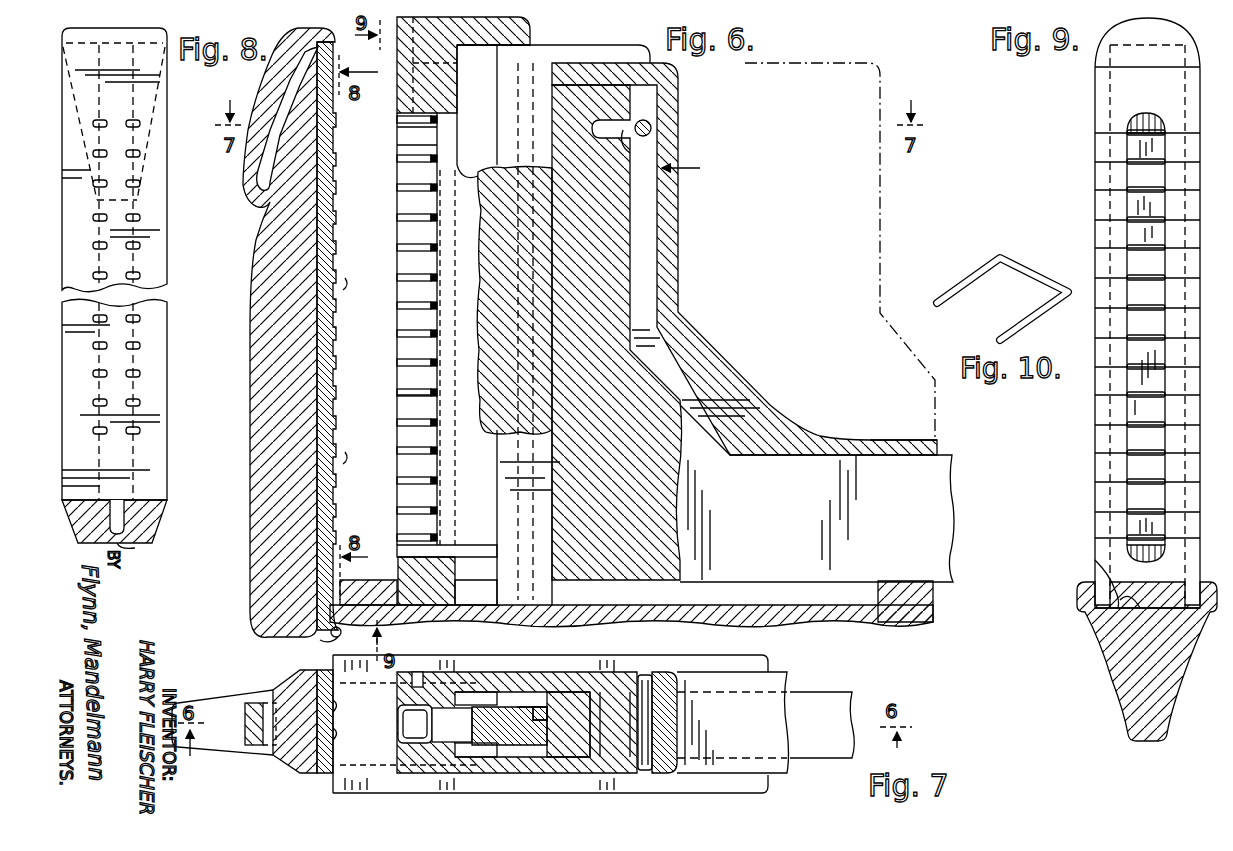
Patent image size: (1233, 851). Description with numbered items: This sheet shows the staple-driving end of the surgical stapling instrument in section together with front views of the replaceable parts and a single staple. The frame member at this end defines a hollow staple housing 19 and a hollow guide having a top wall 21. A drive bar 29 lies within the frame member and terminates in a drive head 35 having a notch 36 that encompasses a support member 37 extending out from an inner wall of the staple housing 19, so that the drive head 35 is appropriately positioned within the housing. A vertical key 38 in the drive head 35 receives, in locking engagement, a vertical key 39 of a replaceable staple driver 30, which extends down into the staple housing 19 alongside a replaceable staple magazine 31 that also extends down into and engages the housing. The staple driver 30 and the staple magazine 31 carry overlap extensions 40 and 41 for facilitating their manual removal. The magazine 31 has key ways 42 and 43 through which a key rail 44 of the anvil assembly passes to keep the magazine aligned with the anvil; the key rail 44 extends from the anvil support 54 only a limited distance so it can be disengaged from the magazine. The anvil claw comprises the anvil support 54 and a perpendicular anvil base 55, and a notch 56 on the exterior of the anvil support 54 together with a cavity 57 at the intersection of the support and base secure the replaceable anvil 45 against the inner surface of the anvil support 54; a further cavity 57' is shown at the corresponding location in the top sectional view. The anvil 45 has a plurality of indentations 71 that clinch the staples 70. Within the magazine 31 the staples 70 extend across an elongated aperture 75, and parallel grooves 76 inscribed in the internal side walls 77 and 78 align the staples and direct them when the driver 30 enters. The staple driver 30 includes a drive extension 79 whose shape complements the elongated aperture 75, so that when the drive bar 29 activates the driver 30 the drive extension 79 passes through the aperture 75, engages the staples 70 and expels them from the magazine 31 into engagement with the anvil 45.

In FIG. 6, the staple housing 19 is at (680, 235).
In FIG. 7, the staple housing 19 is at (480, 672).
In FIG. 6, the top wall 21 is at (905, 440).
In FIG. 6, the drive bar 29 is at (803, 527).
In FIG. 7, the drive bar 29 is at (818, 698).
In FIG. 6, the staple driver 30 is at (484, 128).
In FIG. 7, the staple driver 30 is at (508, 760).
In FIG. 9, the staple driver 30 is at (1146, 123).
In FIG. 7, the staple magazine 31 is at (418, 672).
In FIG. 9, the staple magazine 31 is at (1200, 205).
In FIG. 6, the drive head 35 is at (633, 298).
In FIG. 7, the drive head 35 is at (585, 760).
In FIG. 6, the notch 36 is at (634, 152).
In FIG. 7, the notch 36 is at (612, 700).
In FIG. 6, the support member 37 is at (650, 124).
In FIG. 7, the support member 37 is at (662, 722).
In FIG. 6, the vertical key 38 is at (518, 462).
In FIG. 7, the vertical key 38 is at (545, 690).
In FIG. 7, the vertical key 39 is at (568, 765).
In FIG. 6, the overlap extension 40 is at (618, 55).
In FIG. 6, the overlap extension 41 is at (528, 40).
In FIG. 9, the overlap extension 41 is at (1170, 42).
In FIG. 6, the key way 42 is at (375, 590).
In FIG. 7, the key way 42 is at (419, 717).
In FIG. 9, the key way 42 is at (1105, 588).
In FIG. 9, the key way 43 is at (1182, 600).
In FIG. 7, the key rail 44 is at (355, 775).
In FIG. 9, the key rail 44 is at (1195, 590).
In FIG. 8, the replaceable anvil 45 is at (152, 405).
In FIG. 6, the replaceable anvil 45 is at (341, 205).
In FIG. 7, the replaceable anvil 45 is at (325, 775).
In FIG. 6, the anvil support 54 is at (251, 258).
In FIG. 7, the anvil support 54 is at (232, 748).
In FIG. 8, the anvil base 55 is at (72, 522).
In FIG. 9, the anvil base 55 is at (1177, 698).
In FIG. 6, the notch 56 is at (260, 207).
In FIG. 8, the cavity 57 is at (147, 555).
In FIG. 6, the cavity 57 is at (300, 653).
In FIG. 7, the end 57' is at (277, 737).
In FIG. 6, the staple 70 is at (403, 248).
In FIG. 7, the staple 70 is at (436, 723).
In FIG. 9, the staple 70 is at (1127, 200).
In FIG. 10, the staple 70 is at (970, 275).
In FIG. 8, the indentations 71 is at (140, 156).
In FIG. 6, the indentations 71 is at (361, 374).
In FIG. 7, the indentations 71 is at (338, 722).
In FIG. 6, the elongated aperture 75 is at (410, 404).
In FIG. 9, the elongated aperture 75 is at (1140, 497).
In FIG. 9, the parallel grooves 76 is at (1200, 280).
In FIG. 9, the internal side wall 77 is at (1165, 385).
In FIG. 6, the internal side wall 78 is at (408, 147).
In FIG. 9, the internal side wall 78 is at (1127, 380).
In FIG. 6, the drive extension 79 is at (490, 510).
In FIG. 7, the drive extension 79 is at (458, 758).